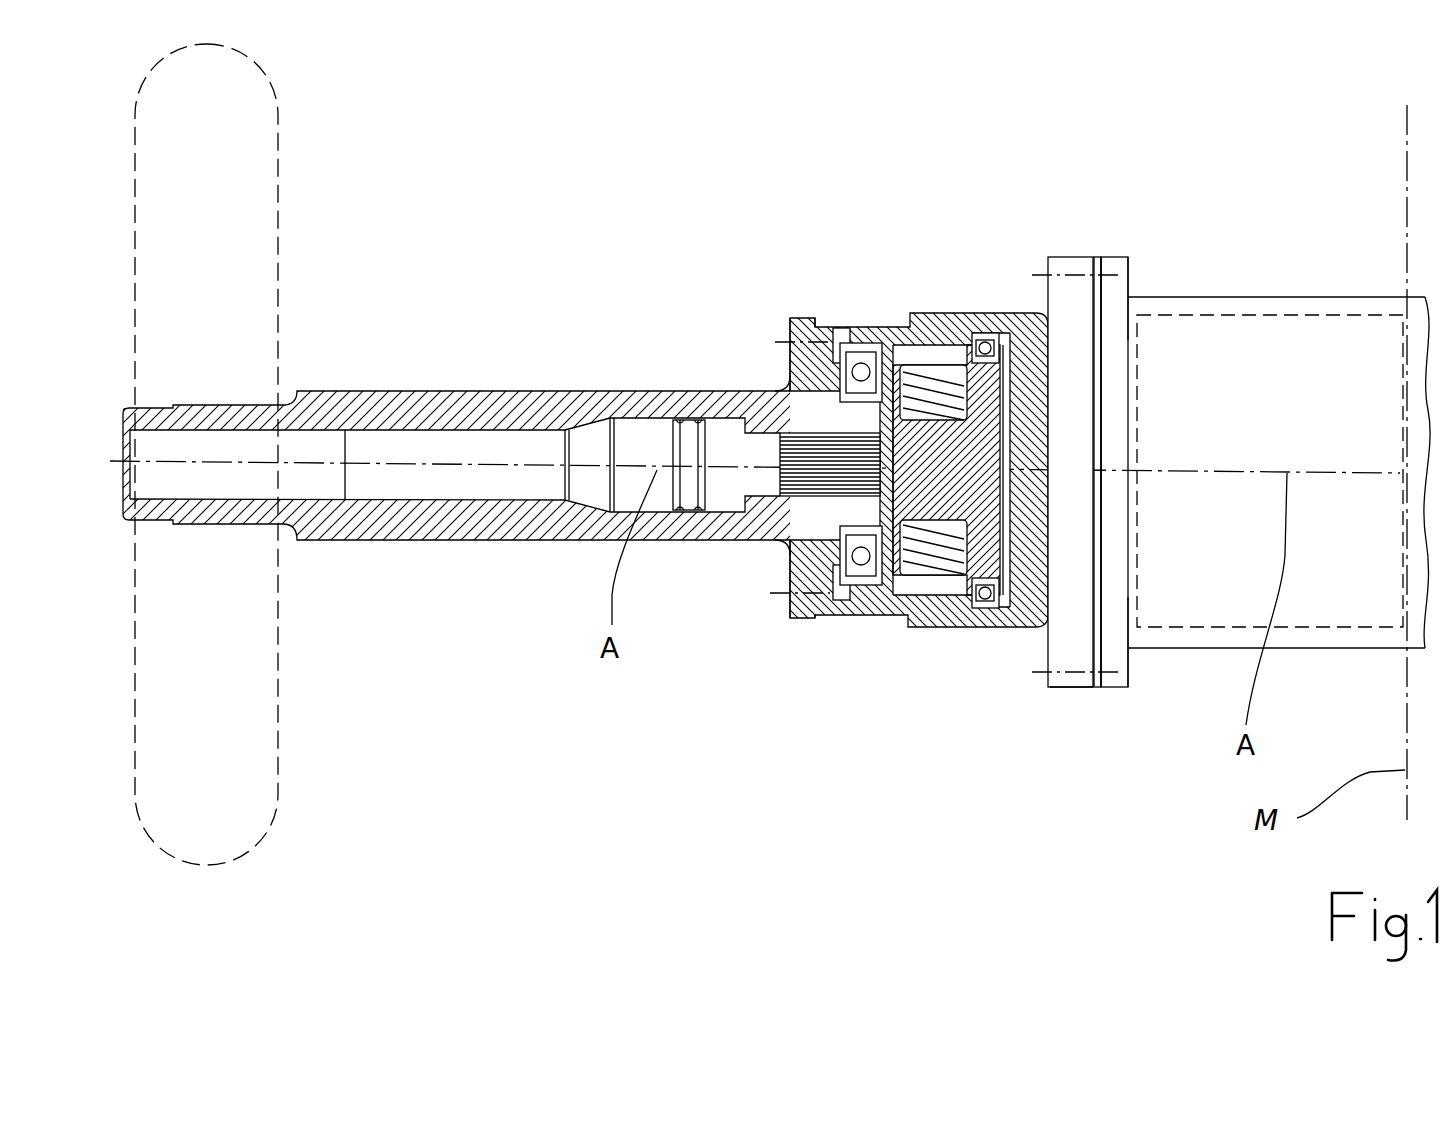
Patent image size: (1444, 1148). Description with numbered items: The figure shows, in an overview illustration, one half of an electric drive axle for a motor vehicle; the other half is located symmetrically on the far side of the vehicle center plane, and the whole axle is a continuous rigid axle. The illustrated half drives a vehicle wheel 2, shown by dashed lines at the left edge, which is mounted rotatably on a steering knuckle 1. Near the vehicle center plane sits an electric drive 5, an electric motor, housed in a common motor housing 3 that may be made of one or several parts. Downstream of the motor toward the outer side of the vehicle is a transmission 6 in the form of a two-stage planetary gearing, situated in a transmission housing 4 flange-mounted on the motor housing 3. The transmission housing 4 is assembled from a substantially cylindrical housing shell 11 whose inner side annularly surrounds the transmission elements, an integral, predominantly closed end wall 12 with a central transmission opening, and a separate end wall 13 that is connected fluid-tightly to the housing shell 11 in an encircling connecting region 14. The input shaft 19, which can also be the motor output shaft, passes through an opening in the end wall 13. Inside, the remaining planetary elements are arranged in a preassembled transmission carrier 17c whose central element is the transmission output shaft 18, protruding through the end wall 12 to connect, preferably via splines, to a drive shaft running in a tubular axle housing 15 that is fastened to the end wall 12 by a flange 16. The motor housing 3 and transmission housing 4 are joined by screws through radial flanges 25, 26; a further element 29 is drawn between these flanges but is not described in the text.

The steering knuckle 1 is at (456, 377).
The vehicle wheel 2 is at (262, 698).
The motor housing 3 is at (1279, 387).
The transmission housing 4 is at (896, 473).
The electric drive 5 is at (1227, 312).
The transmission 6 is at (939, 462).
The housing shell 11 is at (1012, 645).
The end wall 12 is at (792, 548).
The end wall 13 is at (1110, 648).
The connecting region 14 is at (1085, 694).
The axle housing 15 is at (574, 389).
The flange 16 is at (805, 612).
The transmission carrier 17c is at (921, 360).
The transmission output shaft 18 is at (758, 432).
The input shaft 19 is at (1008, 400).
The radial flange 25 is at (1120, 655).
The radial flange 26 is at (1068, 290).
The disc 29 is at (1112, 274).